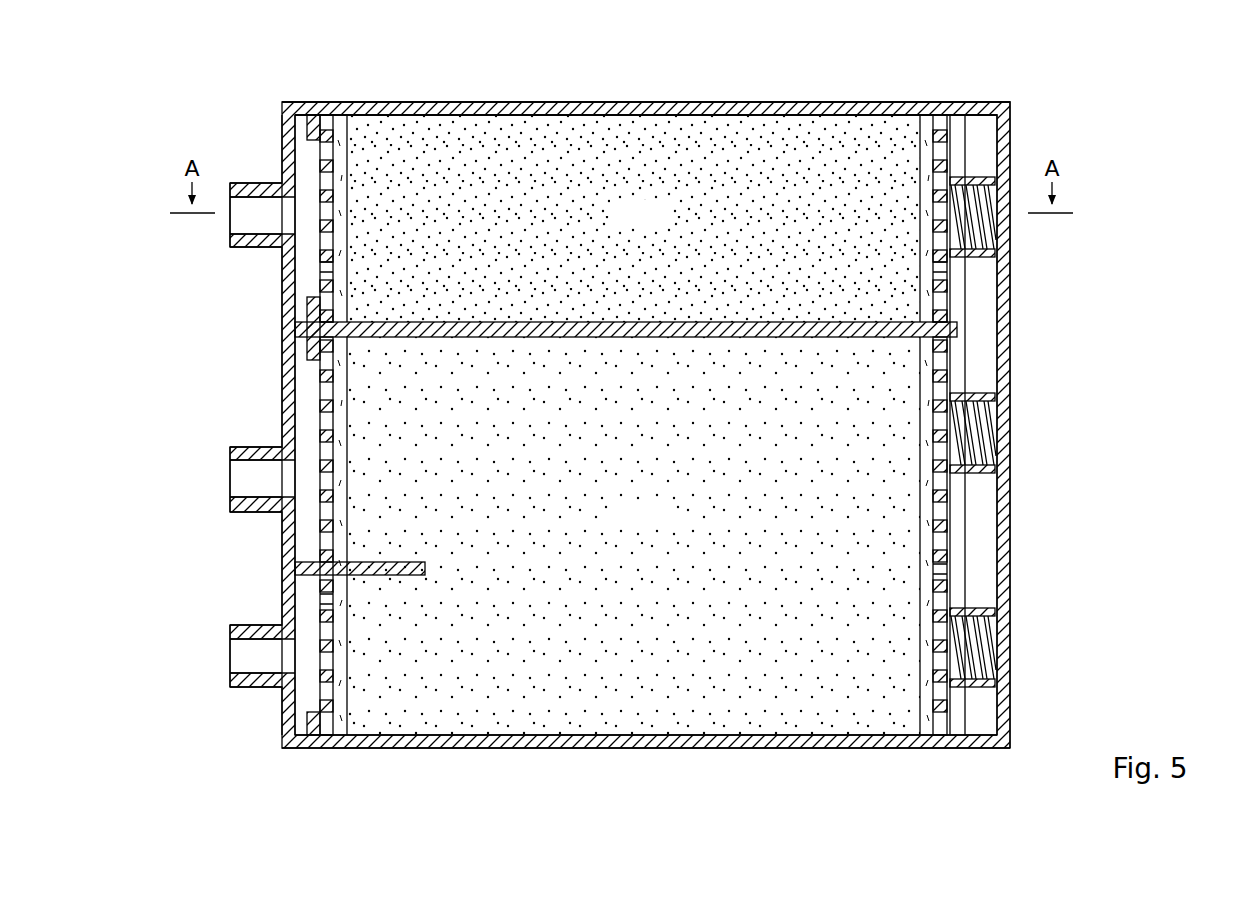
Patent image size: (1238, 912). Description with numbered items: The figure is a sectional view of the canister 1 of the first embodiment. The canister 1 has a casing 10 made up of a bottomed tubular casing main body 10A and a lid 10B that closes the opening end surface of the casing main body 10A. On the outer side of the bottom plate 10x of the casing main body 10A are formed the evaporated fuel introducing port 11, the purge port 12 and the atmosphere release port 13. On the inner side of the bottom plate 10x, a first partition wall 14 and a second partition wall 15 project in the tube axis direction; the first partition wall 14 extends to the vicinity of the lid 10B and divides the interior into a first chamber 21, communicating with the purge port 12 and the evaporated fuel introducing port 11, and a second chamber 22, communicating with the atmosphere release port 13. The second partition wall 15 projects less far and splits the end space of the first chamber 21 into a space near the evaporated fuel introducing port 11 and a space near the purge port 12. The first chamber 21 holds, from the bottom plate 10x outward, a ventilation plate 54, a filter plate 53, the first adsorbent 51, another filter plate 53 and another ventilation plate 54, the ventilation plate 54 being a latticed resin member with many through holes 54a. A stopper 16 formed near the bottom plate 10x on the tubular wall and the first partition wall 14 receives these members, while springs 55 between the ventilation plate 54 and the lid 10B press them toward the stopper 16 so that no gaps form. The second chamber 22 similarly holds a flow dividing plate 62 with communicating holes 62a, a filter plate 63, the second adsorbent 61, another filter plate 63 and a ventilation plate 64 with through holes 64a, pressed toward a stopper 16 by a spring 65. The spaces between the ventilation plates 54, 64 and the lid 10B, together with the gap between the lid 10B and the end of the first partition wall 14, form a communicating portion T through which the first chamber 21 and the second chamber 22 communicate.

The canister 1 is at (732, 57).
The casing 10 is at (897, 58).
The casing main body 10A is at (922, 102).
The lid 10B is at (984, 102).
The bottom plate 10x is at (282, 409).
The evaporated fuel introducing port 11 is at (242, 688).
The purge port 12 is at (243, 512).
The atmosphere release port 13 is at (245, 183).
The first partition wall 14 is at (568, 338).
The second partition wall 15 is at (400, 577).
The stopper 16 is at (307, 318).
The first chamber 21 is at (633, 536).
The second chamber 22 is at (633, 218).
The first adsorbent 51 is at (640, 722).
The filter plate 53 is at (352, 745).
The ventilation plate 54 is at (320, 605).
The through holes 54a is at (320, 621).
The springs 55 is at (985, 470).
The second adsorbent 61 is at (641, 113).
The flow dividing plate 62 is at (320, 292).
The communicating holes 62a is at (320, 277).
The filter plate 63 is at (351, 134).
The ventilation plate 64 is at (950, 292).
The through holes 64a is at (950, 277).
The spring 65 is at (985, 252).
The communicating portion T is at (982, 353).